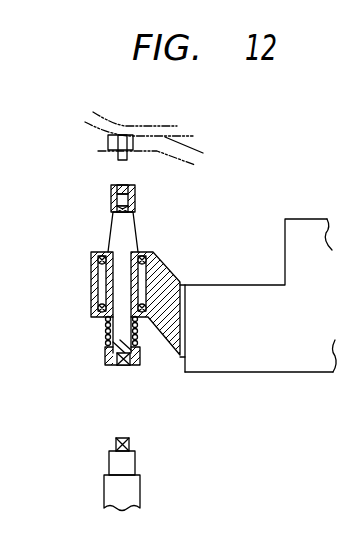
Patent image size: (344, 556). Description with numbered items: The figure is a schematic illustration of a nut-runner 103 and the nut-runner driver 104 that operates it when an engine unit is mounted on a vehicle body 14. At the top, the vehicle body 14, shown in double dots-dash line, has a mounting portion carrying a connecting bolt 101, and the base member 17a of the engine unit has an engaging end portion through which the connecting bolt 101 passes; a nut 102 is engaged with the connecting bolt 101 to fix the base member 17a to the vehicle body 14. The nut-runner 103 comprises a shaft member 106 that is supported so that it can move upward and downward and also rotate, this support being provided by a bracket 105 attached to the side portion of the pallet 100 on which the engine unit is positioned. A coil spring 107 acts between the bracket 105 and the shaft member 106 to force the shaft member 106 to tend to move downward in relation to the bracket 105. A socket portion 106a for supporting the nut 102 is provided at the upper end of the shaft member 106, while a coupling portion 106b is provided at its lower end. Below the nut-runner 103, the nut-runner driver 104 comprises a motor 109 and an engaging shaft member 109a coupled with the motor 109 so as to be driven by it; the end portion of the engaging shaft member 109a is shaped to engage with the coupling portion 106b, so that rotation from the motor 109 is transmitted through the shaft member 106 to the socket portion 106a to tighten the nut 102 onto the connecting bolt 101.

The vehicle body 14 is at (115, 120).
The base member 17a is at (160, 152).
The connecting bolt 101 is at (110, 158).
The nut 102 is at (118, 185).
The socket portion 106a is at (112, 198).
The shaft member 106 is at (121, 252).
The nut-runner 103 is at (80, 292).
The bracket 105 is at (180, 276).
The pallet 100 is at (303, 223).
The coil spring 107 is at (105, 336).
The coupling portion 106b is at (122, 365).
The engaging shaft member 109a is at (117, 438).
The motor 109 is at (110, 488).
The nut-runner driver 104 is at (160, 489).